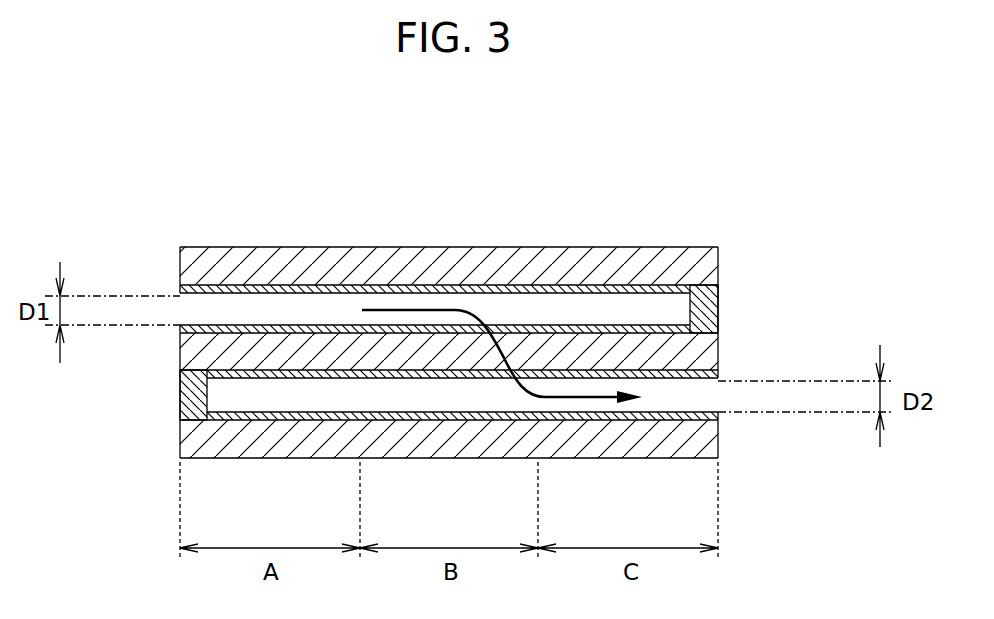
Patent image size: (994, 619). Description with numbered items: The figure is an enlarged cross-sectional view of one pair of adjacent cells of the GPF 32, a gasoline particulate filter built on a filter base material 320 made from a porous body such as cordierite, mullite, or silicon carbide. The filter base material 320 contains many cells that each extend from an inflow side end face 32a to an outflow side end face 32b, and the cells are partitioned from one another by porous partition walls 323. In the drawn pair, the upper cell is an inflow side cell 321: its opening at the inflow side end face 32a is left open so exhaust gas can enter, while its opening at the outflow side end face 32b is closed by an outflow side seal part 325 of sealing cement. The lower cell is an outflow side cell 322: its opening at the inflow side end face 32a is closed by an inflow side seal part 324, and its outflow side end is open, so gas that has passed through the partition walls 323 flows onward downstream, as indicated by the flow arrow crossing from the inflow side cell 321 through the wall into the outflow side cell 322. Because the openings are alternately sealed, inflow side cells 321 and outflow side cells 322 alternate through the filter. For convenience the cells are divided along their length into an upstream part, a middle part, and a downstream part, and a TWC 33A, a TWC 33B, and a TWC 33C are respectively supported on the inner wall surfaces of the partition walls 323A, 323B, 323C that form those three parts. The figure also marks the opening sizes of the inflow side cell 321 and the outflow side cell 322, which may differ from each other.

The GPF 32 is at (443, 150).
The filter base material 320 is at (500, 185).
The inflow side cell 321 is at (165, 308).
The outflow side cell 322 is at (730, 397).
The partition wall 323 is at (648, 247).
The inflow side seal part 324 is at (180, 399).
The outflow side seal part 325 is at (720, 303).
The inflow side end face 32a is at (152, 436).
The outflow side end face 32b is at (752, 330).
The TWC 33A is at (215, 385).
The TWC 33B is at (395, 355).
The TWC 33C is at (580, 355).
The partition wall 323A is at (339, 440).
The partition wall 323B is at (475, 399).
The partition wall 323C is at (675, 399).